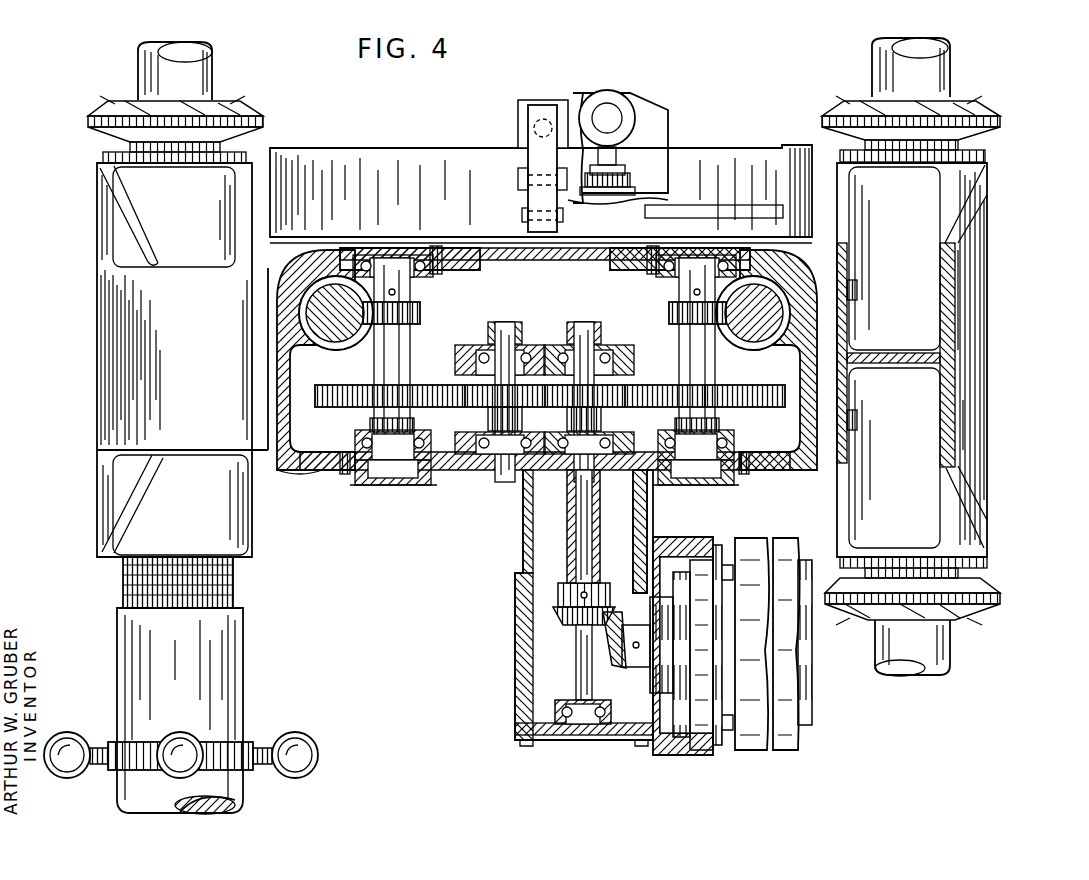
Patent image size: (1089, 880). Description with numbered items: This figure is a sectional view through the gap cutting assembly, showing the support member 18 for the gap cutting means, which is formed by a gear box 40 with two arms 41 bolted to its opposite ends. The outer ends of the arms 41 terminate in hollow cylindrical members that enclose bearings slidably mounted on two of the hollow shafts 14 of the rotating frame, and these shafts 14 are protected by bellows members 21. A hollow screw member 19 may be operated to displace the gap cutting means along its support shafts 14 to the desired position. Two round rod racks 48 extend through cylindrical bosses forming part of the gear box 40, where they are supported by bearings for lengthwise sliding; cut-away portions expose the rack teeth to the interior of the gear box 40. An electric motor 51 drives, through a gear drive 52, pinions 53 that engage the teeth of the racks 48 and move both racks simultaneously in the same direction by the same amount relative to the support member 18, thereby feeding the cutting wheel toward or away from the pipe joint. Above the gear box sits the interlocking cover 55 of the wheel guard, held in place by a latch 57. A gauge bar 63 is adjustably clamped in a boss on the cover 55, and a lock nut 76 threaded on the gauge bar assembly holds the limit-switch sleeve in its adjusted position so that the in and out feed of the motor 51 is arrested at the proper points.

The hollow shafts 14 is at (212, 75).
The bellows members 21 is at (263, 120).
The arms 41 is at (252, 497).
The support member 18 is at (252, 550).
The hollow screw member 19 is at (240, 708).
The interlocking cover 55 is at (432, 148).
The latch 57 is at (533, 140).
The lock nut 76 is at (583, 108).
The gauge bar 63 is at (615, 110).
The round rod racks 48 is at (325, 300).
The gear box 40 is at (323, 480).
The pinions 53 is at (420, 305).
The gear drive 52 is at (468, 385).
The electric motor 51 is at (800, 750).